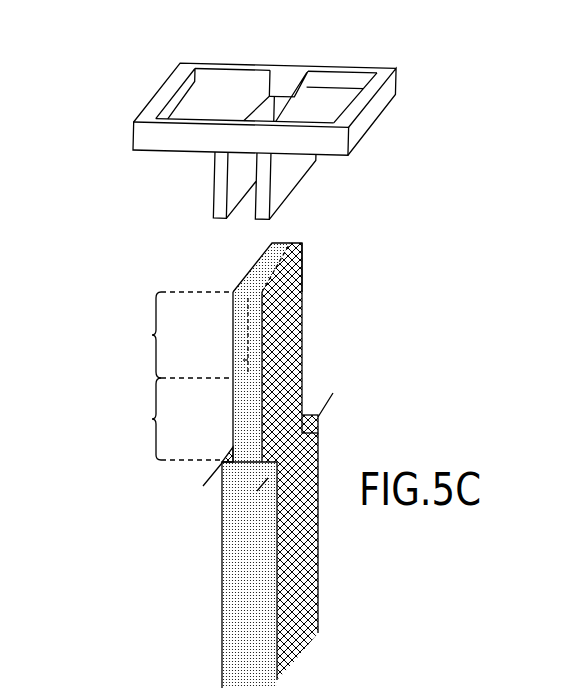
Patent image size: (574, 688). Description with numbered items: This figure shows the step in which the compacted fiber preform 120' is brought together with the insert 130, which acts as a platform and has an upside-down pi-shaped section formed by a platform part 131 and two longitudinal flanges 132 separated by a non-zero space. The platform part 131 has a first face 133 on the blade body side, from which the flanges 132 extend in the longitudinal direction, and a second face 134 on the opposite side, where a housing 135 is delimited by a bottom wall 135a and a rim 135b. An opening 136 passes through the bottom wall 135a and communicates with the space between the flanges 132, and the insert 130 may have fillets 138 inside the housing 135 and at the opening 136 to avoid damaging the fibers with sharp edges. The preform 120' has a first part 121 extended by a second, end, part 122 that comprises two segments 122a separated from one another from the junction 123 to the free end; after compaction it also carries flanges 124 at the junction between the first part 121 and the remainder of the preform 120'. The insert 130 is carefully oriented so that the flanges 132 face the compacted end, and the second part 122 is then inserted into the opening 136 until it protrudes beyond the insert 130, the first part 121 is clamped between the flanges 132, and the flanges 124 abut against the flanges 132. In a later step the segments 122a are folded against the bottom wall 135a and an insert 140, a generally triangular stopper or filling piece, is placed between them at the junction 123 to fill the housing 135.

The fiber preform 120' is at (241, 560).
The first part 121 is at (167, 419).
The second part 122 is at (207, 310).
The segments 122a is at (240, 338).
The junction 123 is at (302, 378).
The flanges 124 is at (306, 429).
The insert 130 is at (240, 111).
The platform part 131 is at (338, 148).
The longitudinal flanges 132 is at (216, 190).
The first face 133 is at (176, 156).
The second face 134 is at (207, 60).
The housing 135 is at (339, 72).
The bottom wall 135a is at (334, 101).
The rim 135b is at (177, 97).
The opening 136 is at (282, 86).
The fillets 138 is at (268, 72).
The insert 140 is at (494, 677).